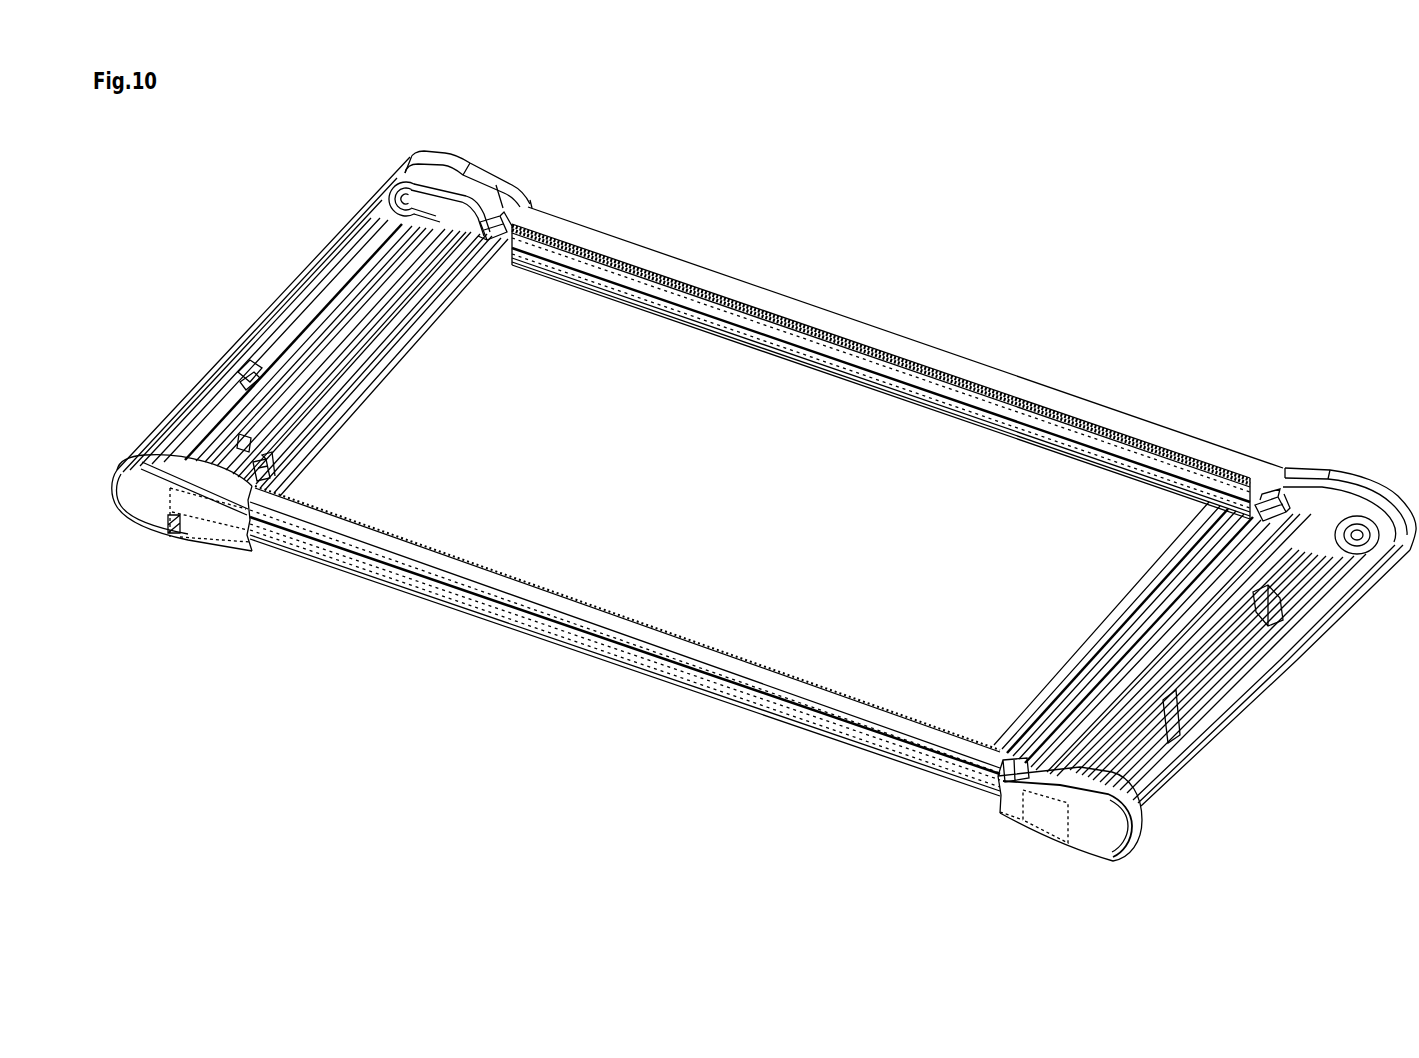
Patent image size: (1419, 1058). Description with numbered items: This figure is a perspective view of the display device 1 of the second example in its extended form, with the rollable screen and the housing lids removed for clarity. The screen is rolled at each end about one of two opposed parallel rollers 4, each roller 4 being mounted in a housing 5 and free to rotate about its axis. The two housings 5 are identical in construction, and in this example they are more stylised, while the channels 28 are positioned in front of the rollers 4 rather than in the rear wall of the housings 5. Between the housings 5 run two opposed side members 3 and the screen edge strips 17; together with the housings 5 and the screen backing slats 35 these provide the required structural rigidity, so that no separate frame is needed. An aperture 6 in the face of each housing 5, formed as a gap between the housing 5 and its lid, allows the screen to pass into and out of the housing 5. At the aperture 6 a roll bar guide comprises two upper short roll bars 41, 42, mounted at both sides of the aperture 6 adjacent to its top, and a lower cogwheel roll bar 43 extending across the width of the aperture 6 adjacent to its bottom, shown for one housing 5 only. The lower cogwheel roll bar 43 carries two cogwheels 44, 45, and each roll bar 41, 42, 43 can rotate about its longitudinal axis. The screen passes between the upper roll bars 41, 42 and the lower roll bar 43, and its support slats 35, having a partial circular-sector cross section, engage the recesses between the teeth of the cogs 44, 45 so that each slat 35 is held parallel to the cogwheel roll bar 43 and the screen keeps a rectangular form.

The display device 1 is at (745, 720).
The side members 3 is at (745, 327).
The roller 4 is at (352, 272).
The housing 5 is at (530, 204).
The aperture 6 is at (323, 435).
The screen edge strips 17 is at (876, 333).
The channels 28 is at (413, 222).
The support slats 35 is at (1165, 553).
The upper short roll bar 41 is at (1284, 470).
The upper short roll bar 42 is at (1027, 758).
The lower cogwheel roll bar 43 is at (410, 323).
The cogwheel 44 is at (492, 240).
The cogwheel 45 is at (273, 480).